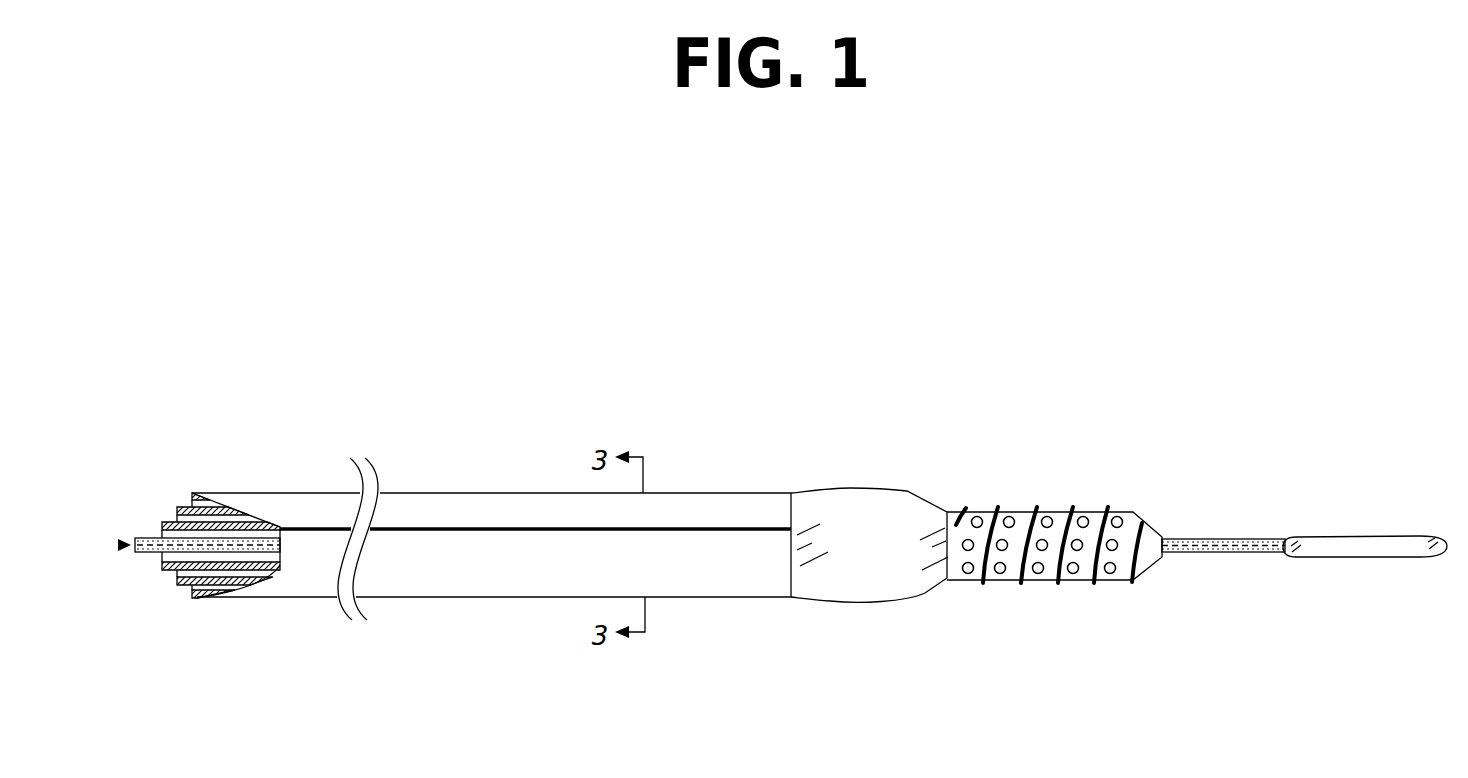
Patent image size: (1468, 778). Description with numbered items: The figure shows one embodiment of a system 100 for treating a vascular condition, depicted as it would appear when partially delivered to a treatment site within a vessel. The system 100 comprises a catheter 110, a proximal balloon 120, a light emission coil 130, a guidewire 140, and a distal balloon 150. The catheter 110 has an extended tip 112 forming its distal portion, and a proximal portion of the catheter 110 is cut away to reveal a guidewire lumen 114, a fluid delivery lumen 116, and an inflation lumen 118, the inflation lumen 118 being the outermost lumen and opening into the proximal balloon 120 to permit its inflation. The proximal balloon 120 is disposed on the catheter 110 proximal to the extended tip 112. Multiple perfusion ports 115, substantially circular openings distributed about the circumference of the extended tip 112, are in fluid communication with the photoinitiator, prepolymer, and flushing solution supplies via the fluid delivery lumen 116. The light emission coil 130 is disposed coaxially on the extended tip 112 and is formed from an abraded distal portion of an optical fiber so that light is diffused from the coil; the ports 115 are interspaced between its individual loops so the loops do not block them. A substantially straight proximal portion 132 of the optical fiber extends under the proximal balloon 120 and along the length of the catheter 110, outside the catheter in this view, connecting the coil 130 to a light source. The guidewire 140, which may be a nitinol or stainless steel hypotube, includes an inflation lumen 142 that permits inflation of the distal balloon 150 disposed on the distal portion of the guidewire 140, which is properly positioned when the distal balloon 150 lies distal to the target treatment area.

The system for treating a vascular condition 100 is at (104, 181).
The catheter 110 is at (490, 507).
The extended tip 112 is at (1057, 548).
The guidewire lumen 114 is at (272, 558).
The perfusion ports 115 is at (1085, 516).
The fluid delivery lumen 116 is at (242, 574).
The inflation lumen 118 is at (213, 598).
The proximal balloon 120 is at (863, 507).
The light emission coil 130 is at (997, 509).
The proximal portion of the optical fiber 132 is at (693, 527).
The guidewire 140 is at (143, 552).
The inflation lumen 142 is at (122, 545).
The distal balloon 150 is at (1367, 538).